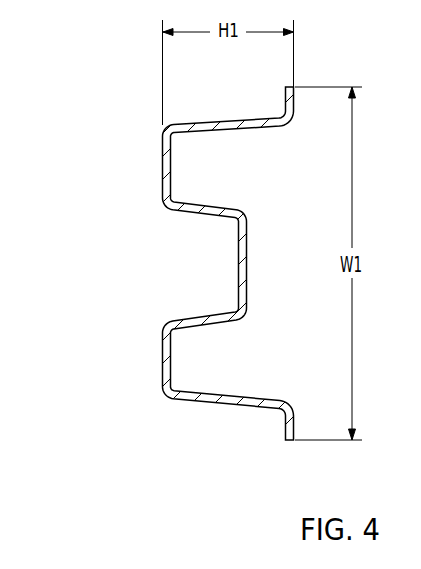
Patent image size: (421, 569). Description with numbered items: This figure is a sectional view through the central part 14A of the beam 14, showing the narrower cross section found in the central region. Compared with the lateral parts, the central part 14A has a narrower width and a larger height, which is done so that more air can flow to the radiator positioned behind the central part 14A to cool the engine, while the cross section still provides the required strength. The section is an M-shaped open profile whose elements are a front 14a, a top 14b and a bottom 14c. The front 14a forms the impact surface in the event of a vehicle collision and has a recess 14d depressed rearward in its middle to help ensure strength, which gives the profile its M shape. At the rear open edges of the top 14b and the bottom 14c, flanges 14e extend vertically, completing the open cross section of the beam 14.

The bumper reinforcement 14 is at (183, 284).
The central part 14A is at (183, 284).
The front 14a is at (162, 342).
The top 14b is at (235, 118).
The bottom 14c is at (227, 407).
The recess 14d is at (237, 262).
The flanges 14e is at (291, 100).